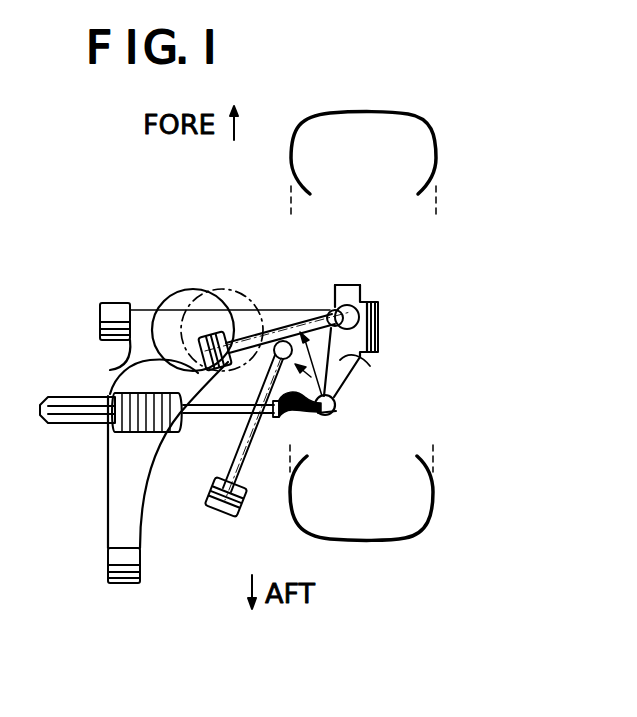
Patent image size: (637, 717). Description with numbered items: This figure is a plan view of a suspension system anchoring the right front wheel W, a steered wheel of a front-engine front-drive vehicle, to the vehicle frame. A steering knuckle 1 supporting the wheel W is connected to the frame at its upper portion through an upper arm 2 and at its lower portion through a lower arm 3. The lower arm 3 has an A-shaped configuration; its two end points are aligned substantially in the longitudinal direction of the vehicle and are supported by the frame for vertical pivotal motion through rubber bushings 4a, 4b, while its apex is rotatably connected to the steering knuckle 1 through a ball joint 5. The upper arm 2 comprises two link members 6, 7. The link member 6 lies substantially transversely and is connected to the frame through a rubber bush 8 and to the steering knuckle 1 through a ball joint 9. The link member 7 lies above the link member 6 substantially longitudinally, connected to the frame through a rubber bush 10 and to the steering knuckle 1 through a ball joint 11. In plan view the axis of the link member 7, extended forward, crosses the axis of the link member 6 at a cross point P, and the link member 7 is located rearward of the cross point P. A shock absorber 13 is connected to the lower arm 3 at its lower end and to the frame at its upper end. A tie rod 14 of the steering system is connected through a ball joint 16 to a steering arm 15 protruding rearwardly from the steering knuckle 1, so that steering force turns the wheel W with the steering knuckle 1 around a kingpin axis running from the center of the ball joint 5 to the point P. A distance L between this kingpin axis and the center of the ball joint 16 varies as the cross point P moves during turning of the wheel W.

The steering knuckle 1 is at (380, 321).
The upper arm 2 is at (348, 361).
The lower arm 3 is at (190, 300).
The rubber bushing 4a is at (118, 304).
The rubber bushing 4b is at (132, 584).
The ball joint 5 is at (346, 290).
The link member 6 is at (252, 302).
The link member 7 is at (262, 432).
The rubber bush 8 is at (118, 362).
The ball joint 9 is at (335, 305).
The rubber bush 10 is at (215, 514).
The ball joint 11 is at (380, 345).
The shock absorber 13 is at (222, 289).
The tie rod 14 is at (198, 414).
The steering arm 15 is at (372, 366).
The ball joint 16 is at (337, 414).
The front wheel W is at (436, 152).
The cross point P is at (288, 341).
The distance L is at (372, 376).